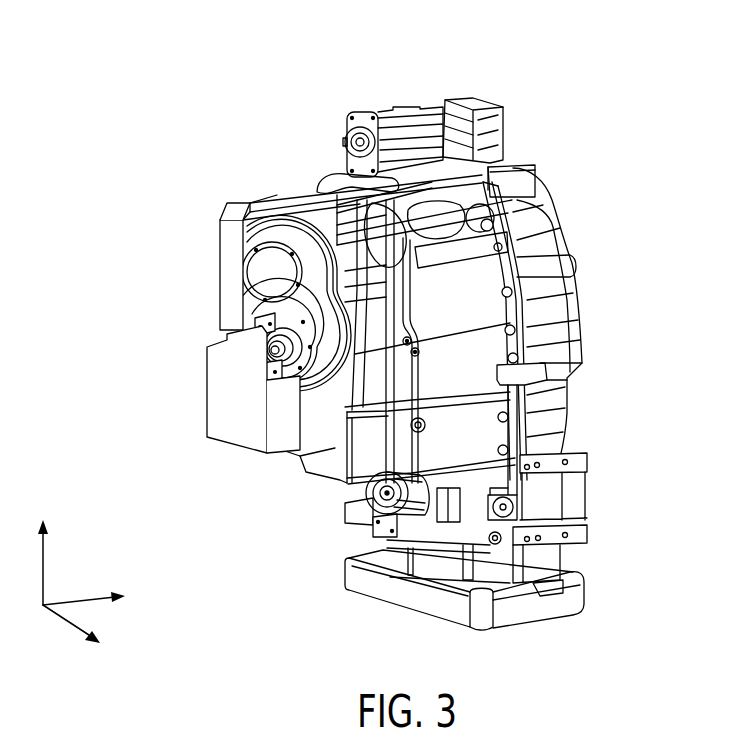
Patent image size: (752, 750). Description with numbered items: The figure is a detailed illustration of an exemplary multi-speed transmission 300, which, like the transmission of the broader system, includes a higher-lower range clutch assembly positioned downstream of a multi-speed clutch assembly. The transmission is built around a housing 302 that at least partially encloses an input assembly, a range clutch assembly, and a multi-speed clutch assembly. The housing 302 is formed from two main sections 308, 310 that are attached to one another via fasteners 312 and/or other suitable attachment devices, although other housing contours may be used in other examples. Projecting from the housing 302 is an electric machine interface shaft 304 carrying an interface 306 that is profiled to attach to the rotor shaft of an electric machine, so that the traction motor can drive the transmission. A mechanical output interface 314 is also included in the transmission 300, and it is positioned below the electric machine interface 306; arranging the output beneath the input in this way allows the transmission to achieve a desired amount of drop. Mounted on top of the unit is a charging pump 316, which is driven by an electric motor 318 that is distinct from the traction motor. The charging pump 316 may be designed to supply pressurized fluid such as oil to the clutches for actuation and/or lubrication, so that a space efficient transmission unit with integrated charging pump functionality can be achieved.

The multi-speed transmission 300 is at (185, 135).
The housing 302 is at (190, 222).
The electric machine interface shaft 304 is at (278, 347).
The interface 306 is at (263, 380).
The main section 308 is at (618, 318).
The main section 310 is at (312, 455).
The fasteners 312 is at (513, 337).
The mechanical output interface 314 is at (373, 528).
The charging pump 316 is at (387, 88).
The electric motor 318 is at (455, 85).